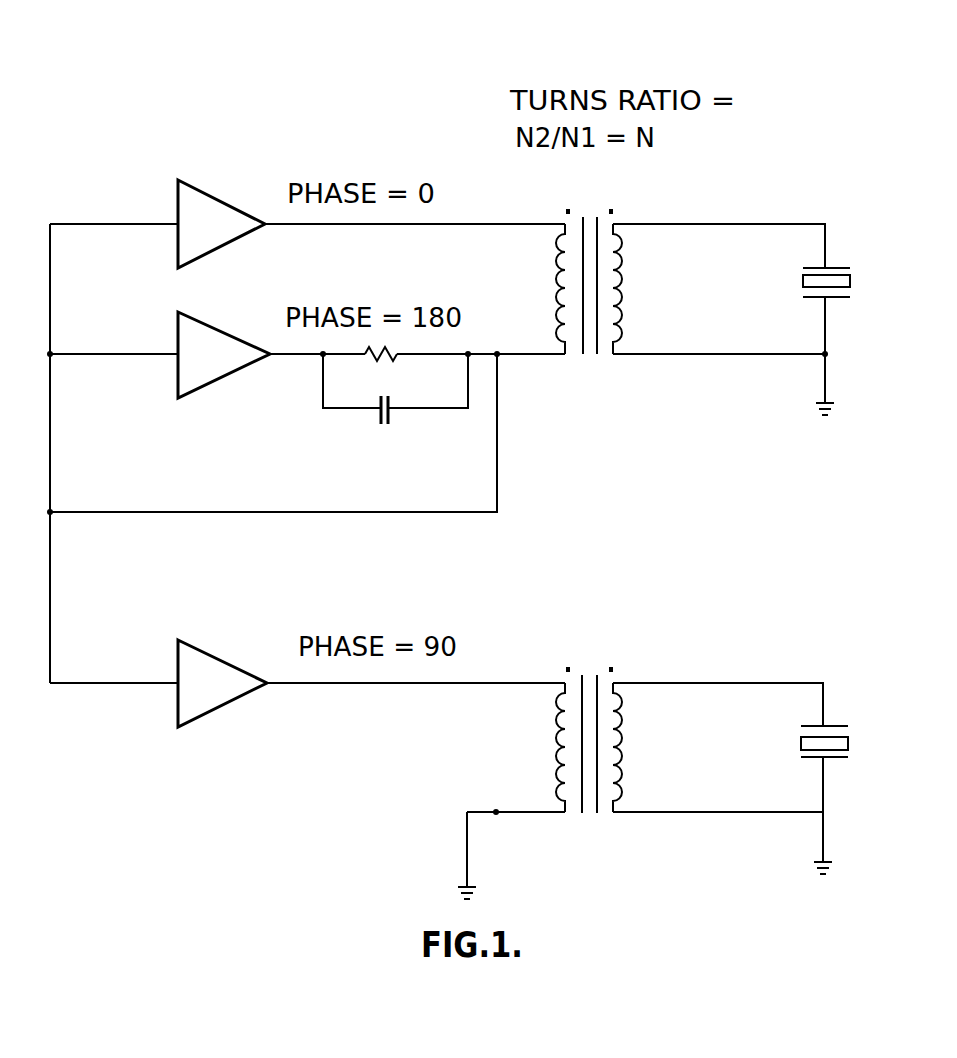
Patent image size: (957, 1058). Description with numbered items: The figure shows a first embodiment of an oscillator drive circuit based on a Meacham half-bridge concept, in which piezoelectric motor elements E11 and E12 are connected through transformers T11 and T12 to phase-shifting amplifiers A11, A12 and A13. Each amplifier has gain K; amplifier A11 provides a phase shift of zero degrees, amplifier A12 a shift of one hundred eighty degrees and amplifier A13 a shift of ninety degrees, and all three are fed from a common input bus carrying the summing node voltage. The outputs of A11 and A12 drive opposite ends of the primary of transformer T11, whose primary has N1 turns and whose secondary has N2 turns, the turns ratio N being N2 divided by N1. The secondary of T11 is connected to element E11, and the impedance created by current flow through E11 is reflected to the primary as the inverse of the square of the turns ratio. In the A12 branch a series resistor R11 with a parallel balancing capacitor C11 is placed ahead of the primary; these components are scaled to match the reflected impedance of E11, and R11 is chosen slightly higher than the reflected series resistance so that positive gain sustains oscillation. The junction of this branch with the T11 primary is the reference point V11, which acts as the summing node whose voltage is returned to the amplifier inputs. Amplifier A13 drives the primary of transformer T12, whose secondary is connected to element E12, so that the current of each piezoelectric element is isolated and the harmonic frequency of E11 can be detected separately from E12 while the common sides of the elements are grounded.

The phase-shifting amplifier A11 is at (243, 176).
The phase-shifting amplifier A12 is at (243, 308).
The phase-shifting amplifier A13 is at (243, 638).
The transformer T11 is at (585, 264).
The transformer T12 is at (607, 672).
The primary winding turns N1 is at (533, 289).
The secondary winding turns N2 is at (640, 289).
The resistor R11 is at (423, 390).
The capacitor C11 is at (395, 411).
The reference point V11 is at (497, 483).
The piezoelectric motor element E11 is at (843, 268).
The piezoelectric motor element E12 is at (841, 726).